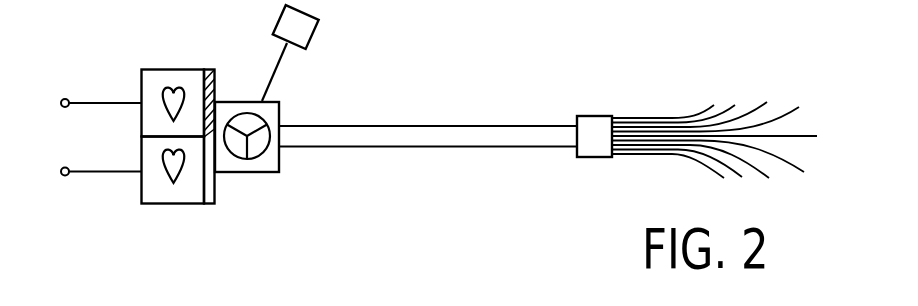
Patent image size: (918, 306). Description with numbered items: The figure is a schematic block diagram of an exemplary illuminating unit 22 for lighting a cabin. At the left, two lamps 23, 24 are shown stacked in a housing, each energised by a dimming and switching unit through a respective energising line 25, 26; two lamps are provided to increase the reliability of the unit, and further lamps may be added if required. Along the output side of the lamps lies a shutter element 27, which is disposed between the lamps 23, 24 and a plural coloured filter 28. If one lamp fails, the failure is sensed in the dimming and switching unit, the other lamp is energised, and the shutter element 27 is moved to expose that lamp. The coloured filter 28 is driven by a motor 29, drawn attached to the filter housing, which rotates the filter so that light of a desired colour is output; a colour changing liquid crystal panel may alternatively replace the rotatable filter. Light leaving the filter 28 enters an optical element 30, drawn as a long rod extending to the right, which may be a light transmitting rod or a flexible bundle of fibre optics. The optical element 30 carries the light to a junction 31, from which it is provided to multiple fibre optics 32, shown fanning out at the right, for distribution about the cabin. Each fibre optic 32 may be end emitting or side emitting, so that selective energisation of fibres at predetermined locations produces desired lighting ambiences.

The illuminating unit 22 is at (346, 223).
The lamp 23 is at (173, 69).
The lamp 24 is at (168, 204).
The energising line 25 is at (83, 103).
The energising line 26 is at (83, 172).
The shutter element 27 is at (214, 95).
The plural coloured filter 28 is at (272, 172).
The motor 29 is at (315, 35).
The optical element 30 is at (478, 126).
The junction 31 is at (588, 122).
The fibre optics 32 is at (672, 128).